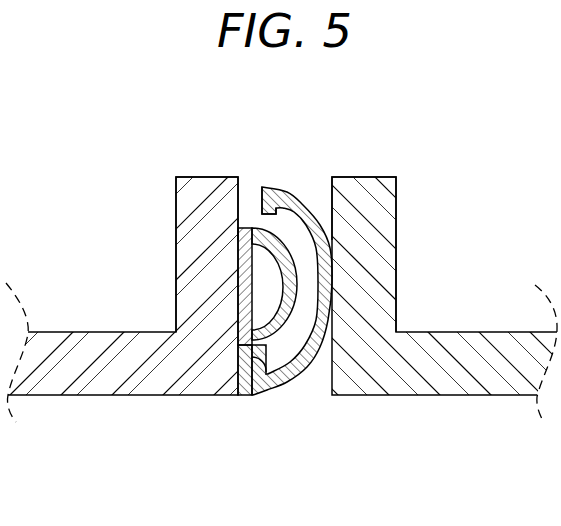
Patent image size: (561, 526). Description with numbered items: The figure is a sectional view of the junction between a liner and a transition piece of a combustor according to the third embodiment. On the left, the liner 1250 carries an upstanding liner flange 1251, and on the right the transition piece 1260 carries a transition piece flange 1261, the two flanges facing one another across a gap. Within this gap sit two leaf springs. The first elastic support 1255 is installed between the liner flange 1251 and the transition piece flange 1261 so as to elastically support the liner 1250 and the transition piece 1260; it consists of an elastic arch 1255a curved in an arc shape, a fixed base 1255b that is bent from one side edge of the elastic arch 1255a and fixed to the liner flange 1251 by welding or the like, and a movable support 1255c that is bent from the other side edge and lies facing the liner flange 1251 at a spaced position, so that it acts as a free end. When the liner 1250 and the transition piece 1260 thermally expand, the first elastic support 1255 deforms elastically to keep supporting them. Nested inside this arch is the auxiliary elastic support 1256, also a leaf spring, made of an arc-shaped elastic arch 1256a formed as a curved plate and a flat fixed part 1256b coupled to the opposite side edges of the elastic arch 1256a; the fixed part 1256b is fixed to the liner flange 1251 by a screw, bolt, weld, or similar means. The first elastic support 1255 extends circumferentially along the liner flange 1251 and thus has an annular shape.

The liner 1250 is at (253, 337).
The liner flange 1251 is at (176, 219).
The first elastic support 1255 is at (278, 275).
The elastic arch 1255a is at (295, 371).
The fixed base 1255b is at (274, 379).
The movable support 1255c is at (264, 186).
The auxiliary elastic support 1256 is at (279, 212).
The elastic arch 1256a is at (296, 287).
The fixed part 1256b is at (238, 289).
The transition piece 1260 is at (300, 337).
The transition piece flange 1261 is at (396, 218).